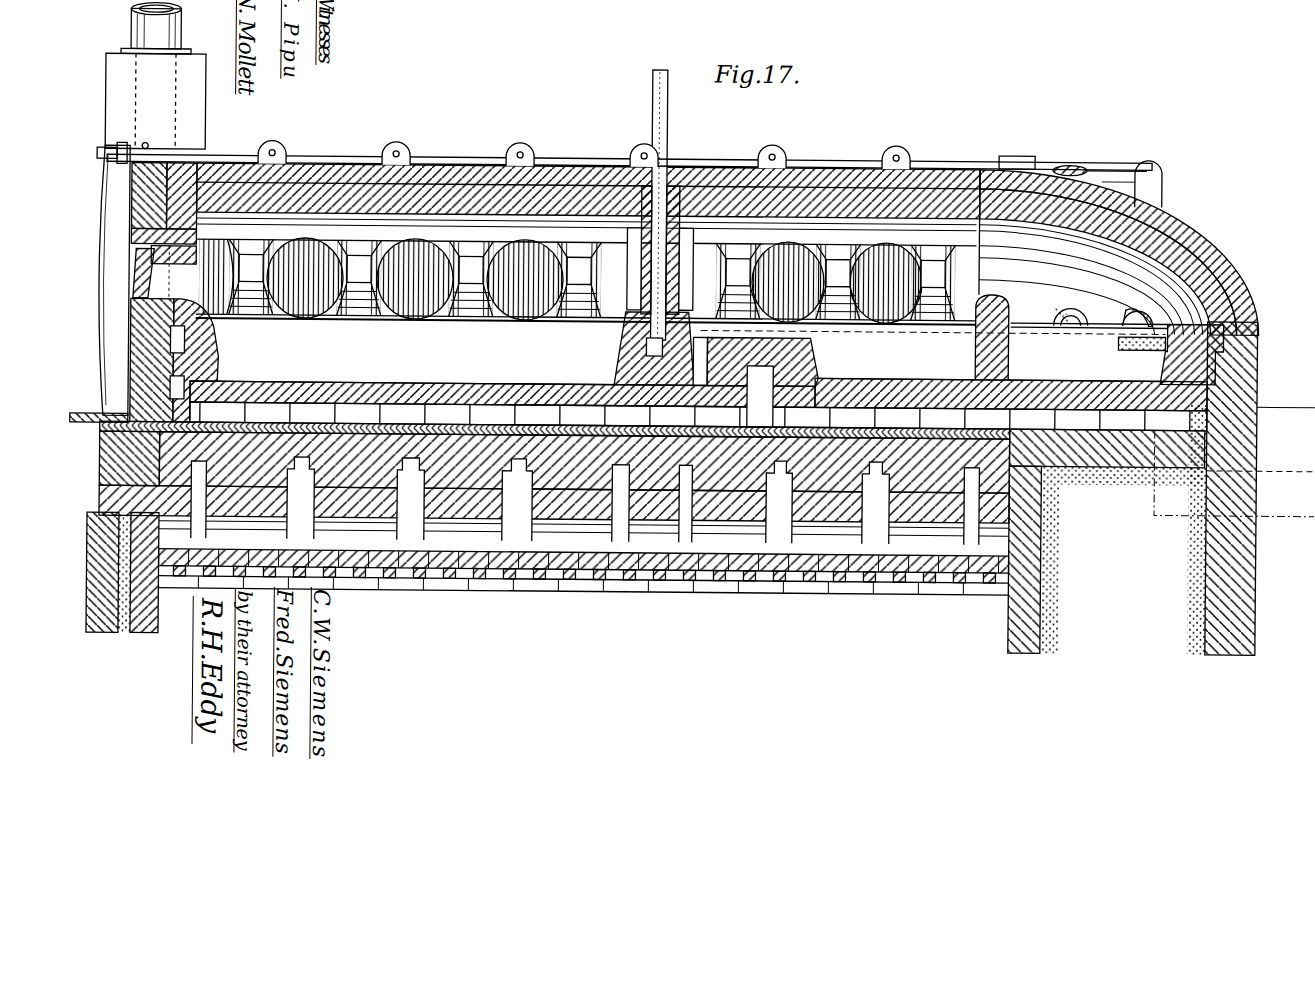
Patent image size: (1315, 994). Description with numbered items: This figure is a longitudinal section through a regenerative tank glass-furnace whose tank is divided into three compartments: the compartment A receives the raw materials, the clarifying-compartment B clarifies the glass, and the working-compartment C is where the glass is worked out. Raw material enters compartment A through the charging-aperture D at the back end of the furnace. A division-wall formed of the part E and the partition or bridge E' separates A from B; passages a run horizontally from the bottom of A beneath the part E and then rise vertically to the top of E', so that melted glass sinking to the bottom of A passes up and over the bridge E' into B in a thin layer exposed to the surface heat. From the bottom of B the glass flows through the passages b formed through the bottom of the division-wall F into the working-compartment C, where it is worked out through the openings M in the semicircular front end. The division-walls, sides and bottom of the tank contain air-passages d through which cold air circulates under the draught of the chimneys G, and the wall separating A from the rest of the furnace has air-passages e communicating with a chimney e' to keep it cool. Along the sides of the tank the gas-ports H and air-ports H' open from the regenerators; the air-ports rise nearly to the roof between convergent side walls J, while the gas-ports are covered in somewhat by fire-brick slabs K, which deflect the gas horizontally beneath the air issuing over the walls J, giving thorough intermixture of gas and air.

The chimney G is at (155, 75).
The chimney e' is at (661, 205).
The air-port H' is at (607, 236).
The fire-brick slab K is at (592, 279).
The side wall J is at (595, 281).
The gas-port H is at (645, 311).
The charging-aperture D is at (159, 271).
The compartment A is at (372, 361).
The air-passage e is at (654, 299).
The division-wall part E is at (654, 322).
The passage a is at (654, 361).
The partition or bridge E' is at (762, 361).
The air-passage d is at (699, 391).
The clarifying-compartment B is at (932, 355).
The passage b is at (961, 372).
The division-wall F is at (992, 329).
The working-compartment C is at (1088, 344).
The working-aperture M is at (1119, 252).